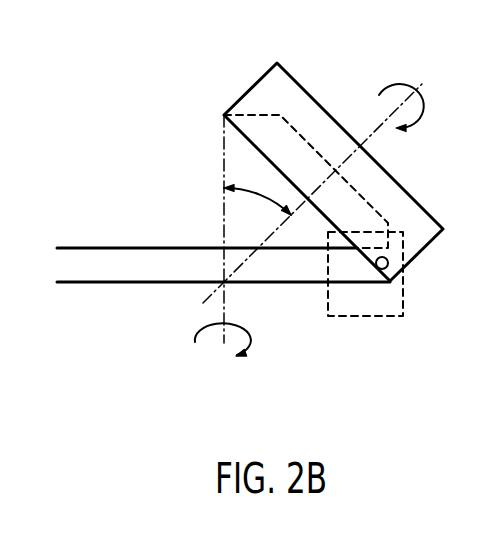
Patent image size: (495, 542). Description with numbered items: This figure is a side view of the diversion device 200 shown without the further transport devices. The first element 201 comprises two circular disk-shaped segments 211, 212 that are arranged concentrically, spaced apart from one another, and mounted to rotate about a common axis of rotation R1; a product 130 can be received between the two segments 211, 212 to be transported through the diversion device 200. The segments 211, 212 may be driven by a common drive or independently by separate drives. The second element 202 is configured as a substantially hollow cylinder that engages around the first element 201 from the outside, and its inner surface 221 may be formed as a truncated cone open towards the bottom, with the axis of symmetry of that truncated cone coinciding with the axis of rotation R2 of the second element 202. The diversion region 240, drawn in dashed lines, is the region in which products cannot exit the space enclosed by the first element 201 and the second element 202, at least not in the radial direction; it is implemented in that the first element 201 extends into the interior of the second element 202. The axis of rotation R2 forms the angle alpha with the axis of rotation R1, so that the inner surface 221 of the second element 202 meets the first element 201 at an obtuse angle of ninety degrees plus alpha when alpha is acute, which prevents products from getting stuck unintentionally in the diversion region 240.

The optical coupling arrangement 200 is at (255, 236).
The first element 201 is at (204, 277).
The second element 202 is at (423, 206).
The circular disk-shaped segment 211 is at (105, 282).
The circular disk-shaped segment 212 is at (107, 248).
The inner surface 221 is at (298, 132).
The product 130 is at (389, 265).
The diversion region 240 is at (383, 317).
The axis of rotation R1 is at (239, 343).
The axis of rotation R2 is at (417, 107).